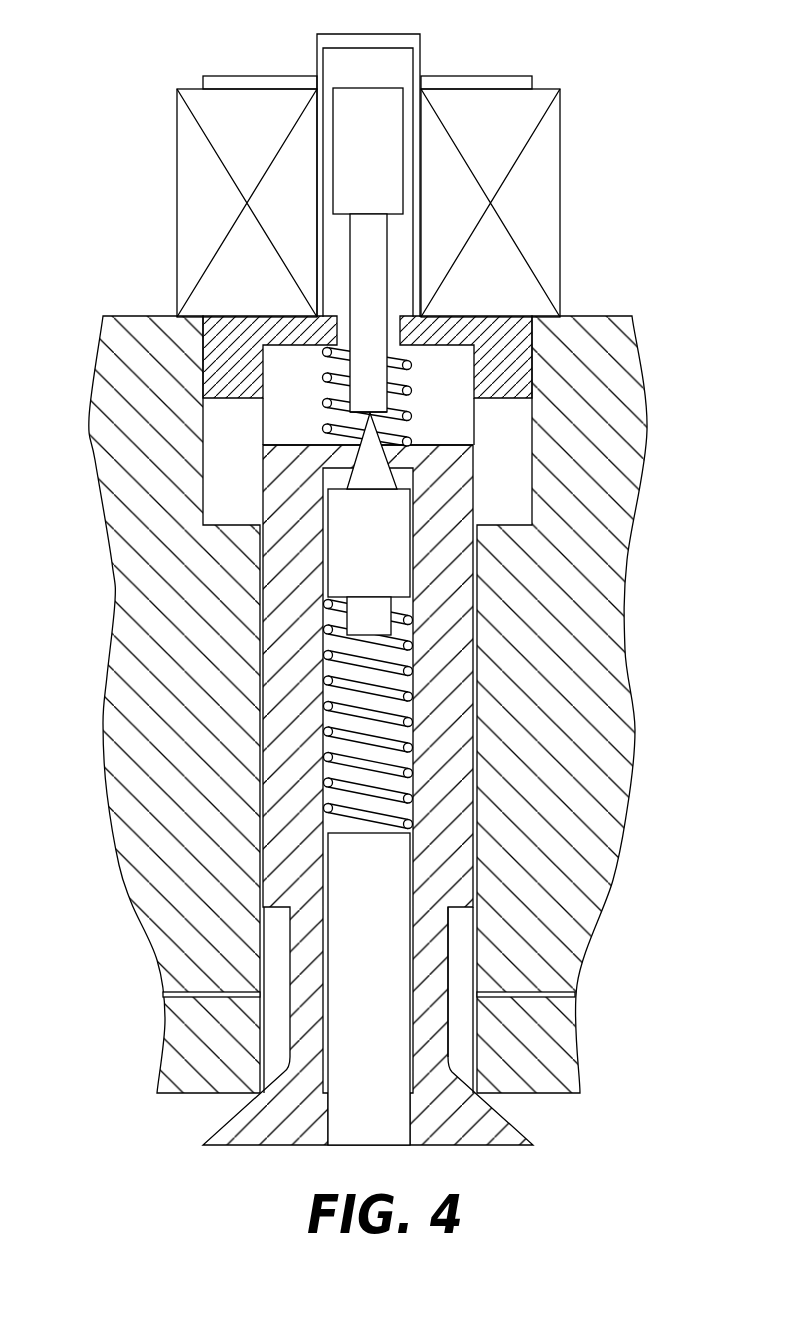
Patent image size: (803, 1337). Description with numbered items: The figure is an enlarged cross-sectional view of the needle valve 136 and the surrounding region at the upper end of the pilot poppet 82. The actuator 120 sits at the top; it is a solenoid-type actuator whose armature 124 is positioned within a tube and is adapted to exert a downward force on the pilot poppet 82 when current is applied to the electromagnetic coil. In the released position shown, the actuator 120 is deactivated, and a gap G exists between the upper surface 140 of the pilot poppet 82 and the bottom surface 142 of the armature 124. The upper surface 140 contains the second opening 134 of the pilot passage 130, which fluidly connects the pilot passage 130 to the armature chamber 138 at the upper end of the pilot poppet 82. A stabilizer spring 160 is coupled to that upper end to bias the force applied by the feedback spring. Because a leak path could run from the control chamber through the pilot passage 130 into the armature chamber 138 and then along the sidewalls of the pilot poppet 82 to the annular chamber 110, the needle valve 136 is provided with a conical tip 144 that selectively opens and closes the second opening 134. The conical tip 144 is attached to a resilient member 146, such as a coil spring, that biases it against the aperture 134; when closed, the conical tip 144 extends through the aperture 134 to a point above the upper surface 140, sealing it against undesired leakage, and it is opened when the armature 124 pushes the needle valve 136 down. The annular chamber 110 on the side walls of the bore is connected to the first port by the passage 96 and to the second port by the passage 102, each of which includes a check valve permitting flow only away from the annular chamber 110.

The actuator 120 is at (388, 88).
The armature 124 is at (387, 260).
The stabilizer spring 160 is at (433, 378).
The bottom surface of armature 142 is at (397, 412).
The upper surface of pilot poppet 140 is at (413, 445).
The armature chamber 138 is at (487, 508).
The conical tip 144 is at (335, 414).
The second opening 134 is at (357, 447).
The needle valve 136 is at (391, 547).
The pilot poppet 82 is at (453, 683).
The resilient member 146 is at (400, 747).
The pilot passage 130 is at (400, 787).
The passage 96 is at (195, 994).
The annular chamber 110 is at (467, 978).
The passage 102 is at (547, 993).
The gap G is at (372, 421).